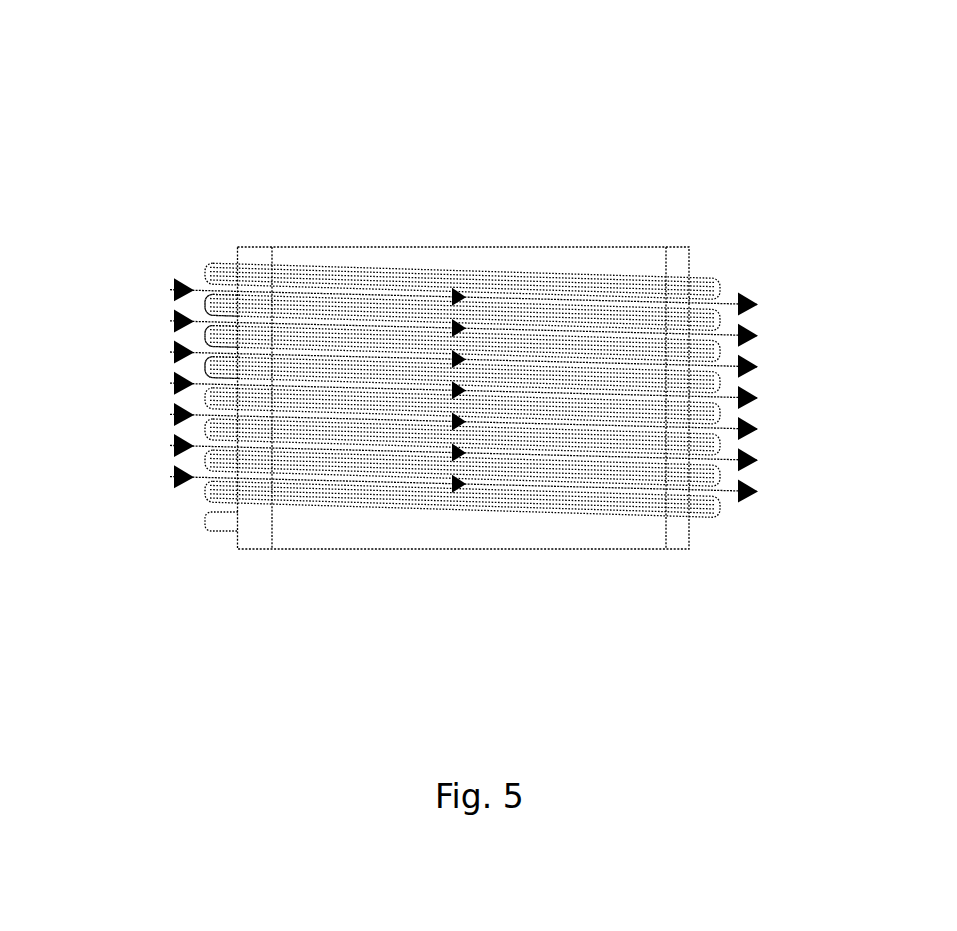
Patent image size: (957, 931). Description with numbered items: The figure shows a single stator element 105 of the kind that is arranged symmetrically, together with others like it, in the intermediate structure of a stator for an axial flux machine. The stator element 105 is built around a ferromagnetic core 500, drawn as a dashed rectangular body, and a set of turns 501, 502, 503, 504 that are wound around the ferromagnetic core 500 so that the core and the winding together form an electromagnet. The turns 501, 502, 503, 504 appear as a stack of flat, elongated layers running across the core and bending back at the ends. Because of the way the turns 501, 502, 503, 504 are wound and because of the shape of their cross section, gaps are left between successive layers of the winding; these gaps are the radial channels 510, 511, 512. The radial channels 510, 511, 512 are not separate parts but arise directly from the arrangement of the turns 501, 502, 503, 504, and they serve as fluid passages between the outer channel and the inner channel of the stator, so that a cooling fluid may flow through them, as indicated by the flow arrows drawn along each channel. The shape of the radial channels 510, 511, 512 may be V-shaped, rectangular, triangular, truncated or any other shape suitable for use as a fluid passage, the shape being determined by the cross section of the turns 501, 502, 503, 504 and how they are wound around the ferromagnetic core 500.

The stator element 105 is at (489, 299).
The ferromagnetic core 500 is at (355, 248).
The turn 501 is at (720, 288).
The turn 502 is at (720, 322).
The turn 503 is at (720, 352).
The turn 504 is at (720, 380).
The radial channel 510 is at (165, 307).
The radial channel 511 is at (165, 335).
The radial channel 512 is at (165, 365).